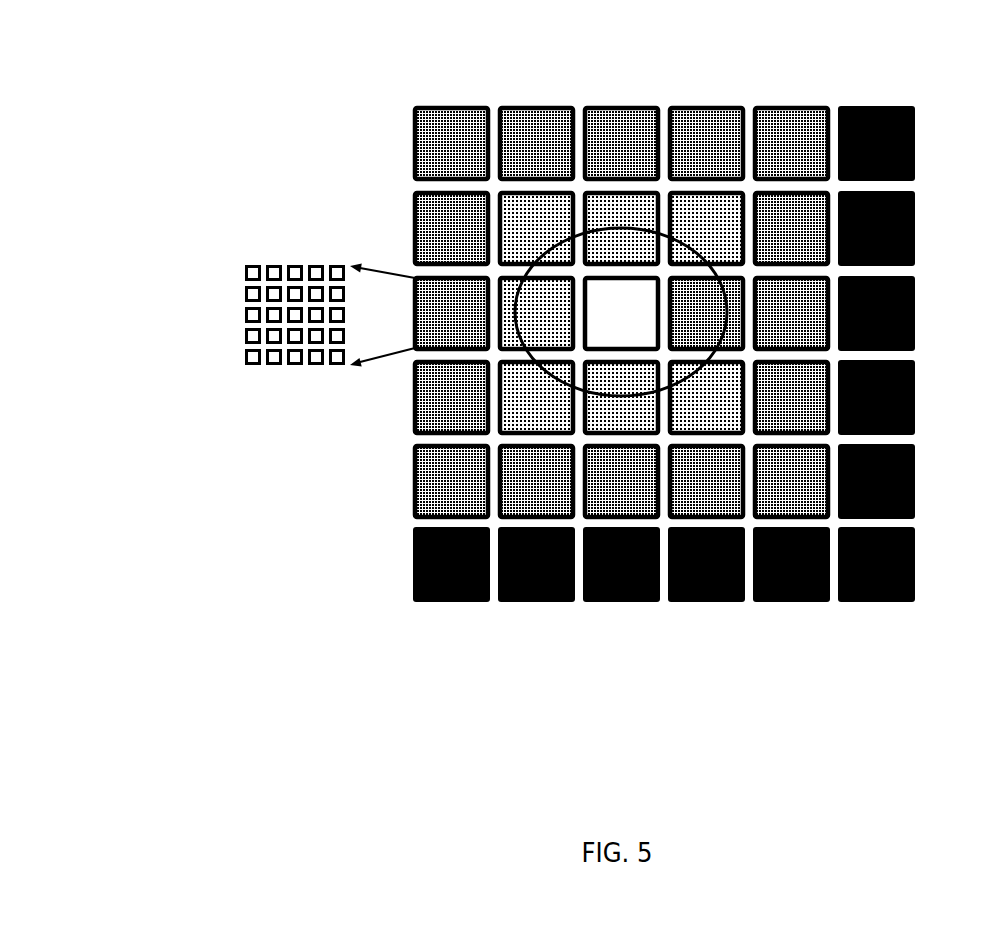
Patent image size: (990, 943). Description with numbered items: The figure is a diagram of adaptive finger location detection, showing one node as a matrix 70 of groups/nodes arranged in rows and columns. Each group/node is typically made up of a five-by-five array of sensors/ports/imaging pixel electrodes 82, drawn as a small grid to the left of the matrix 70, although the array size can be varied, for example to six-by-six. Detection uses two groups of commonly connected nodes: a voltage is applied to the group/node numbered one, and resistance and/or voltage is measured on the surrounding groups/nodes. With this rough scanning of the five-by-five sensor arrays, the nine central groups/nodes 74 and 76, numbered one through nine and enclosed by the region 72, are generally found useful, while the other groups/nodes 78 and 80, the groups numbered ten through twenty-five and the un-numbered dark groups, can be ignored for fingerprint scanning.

The matrix 70 is at (177, 191).
The neighborhood region 72 is at (676, 240).
The group/node 74 is at (621, 278).
The group/node 76 is at (537, 193).
The group/node 78 is at (456, 108).
The group/node 80 is at (914, 142).
The sensors/ports/imaging pixel electrodes 82 is at (227, 312).